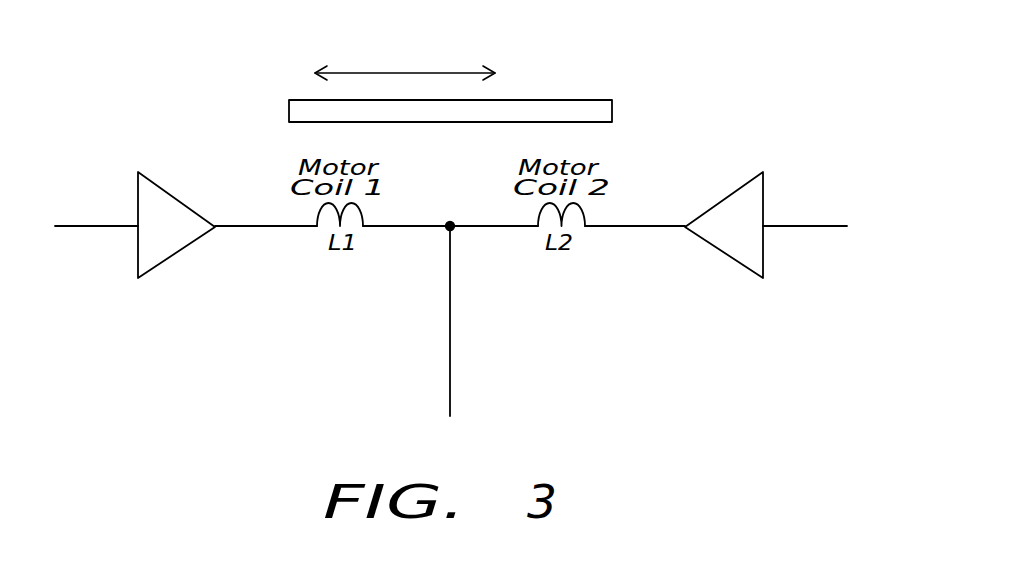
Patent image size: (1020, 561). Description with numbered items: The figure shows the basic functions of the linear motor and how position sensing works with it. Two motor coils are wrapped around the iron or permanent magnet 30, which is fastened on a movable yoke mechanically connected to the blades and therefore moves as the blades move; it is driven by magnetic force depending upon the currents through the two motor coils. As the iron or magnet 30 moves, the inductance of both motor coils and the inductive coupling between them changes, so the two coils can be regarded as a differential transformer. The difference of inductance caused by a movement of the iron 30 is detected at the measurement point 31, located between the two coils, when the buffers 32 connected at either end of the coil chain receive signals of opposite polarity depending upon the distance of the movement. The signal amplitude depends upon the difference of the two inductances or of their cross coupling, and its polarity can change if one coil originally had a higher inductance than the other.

The iron or permanent magnet 30 is at (576, 100).
The measurement point 31 is at (450, 221).
The buffer 32 is at (162, 262).